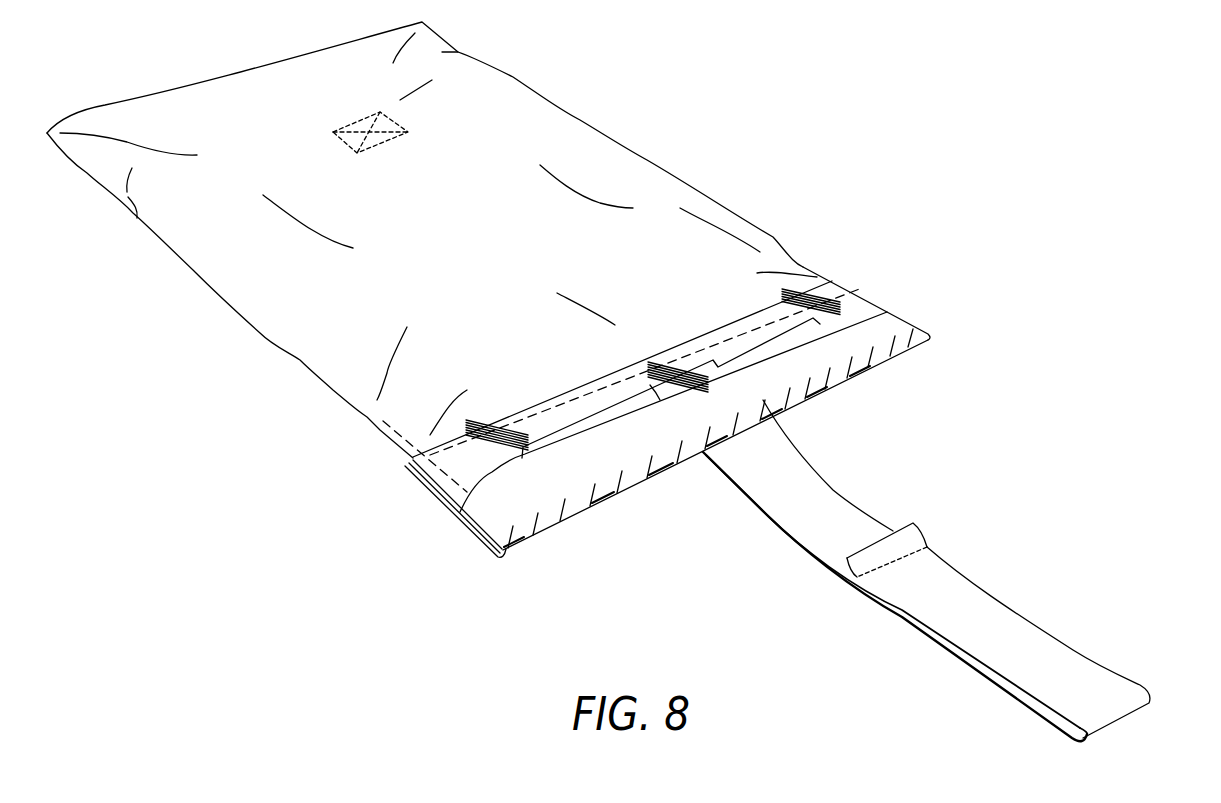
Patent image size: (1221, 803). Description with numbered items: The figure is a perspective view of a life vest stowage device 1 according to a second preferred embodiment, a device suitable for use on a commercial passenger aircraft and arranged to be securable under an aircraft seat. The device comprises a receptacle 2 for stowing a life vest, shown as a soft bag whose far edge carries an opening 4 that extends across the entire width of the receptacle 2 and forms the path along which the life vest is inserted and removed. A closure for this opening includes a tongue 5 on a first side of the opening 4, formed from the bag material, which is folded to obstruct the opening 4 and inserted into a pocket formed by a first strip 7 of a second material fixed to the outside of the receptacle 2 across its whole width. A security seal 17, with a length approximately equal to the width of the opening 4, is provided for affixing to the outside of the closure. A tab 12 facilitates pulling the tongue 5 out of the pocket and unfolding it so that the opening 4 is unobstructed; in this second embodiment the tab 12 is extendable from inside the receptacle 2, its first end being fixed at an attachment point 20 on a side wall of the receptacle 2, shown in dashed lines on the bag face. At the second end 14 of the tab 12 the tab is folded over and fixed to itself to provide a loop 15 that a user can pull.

The life vest stowage device 1 is at (665, 100).
The receptacle 2 is at (503, 92).
The opening 4 is at (627, 498).
The tongue 5 is at (533, 453).
The first strip 7 is at (835, 281).
The tab 12 is at (833, 490).
The second end 14 is at (1147, 672).
The loop 15 is at (1037, 707).
The security seal 17 is at (898, 320).
The attachment point 20 is at (358, 125).